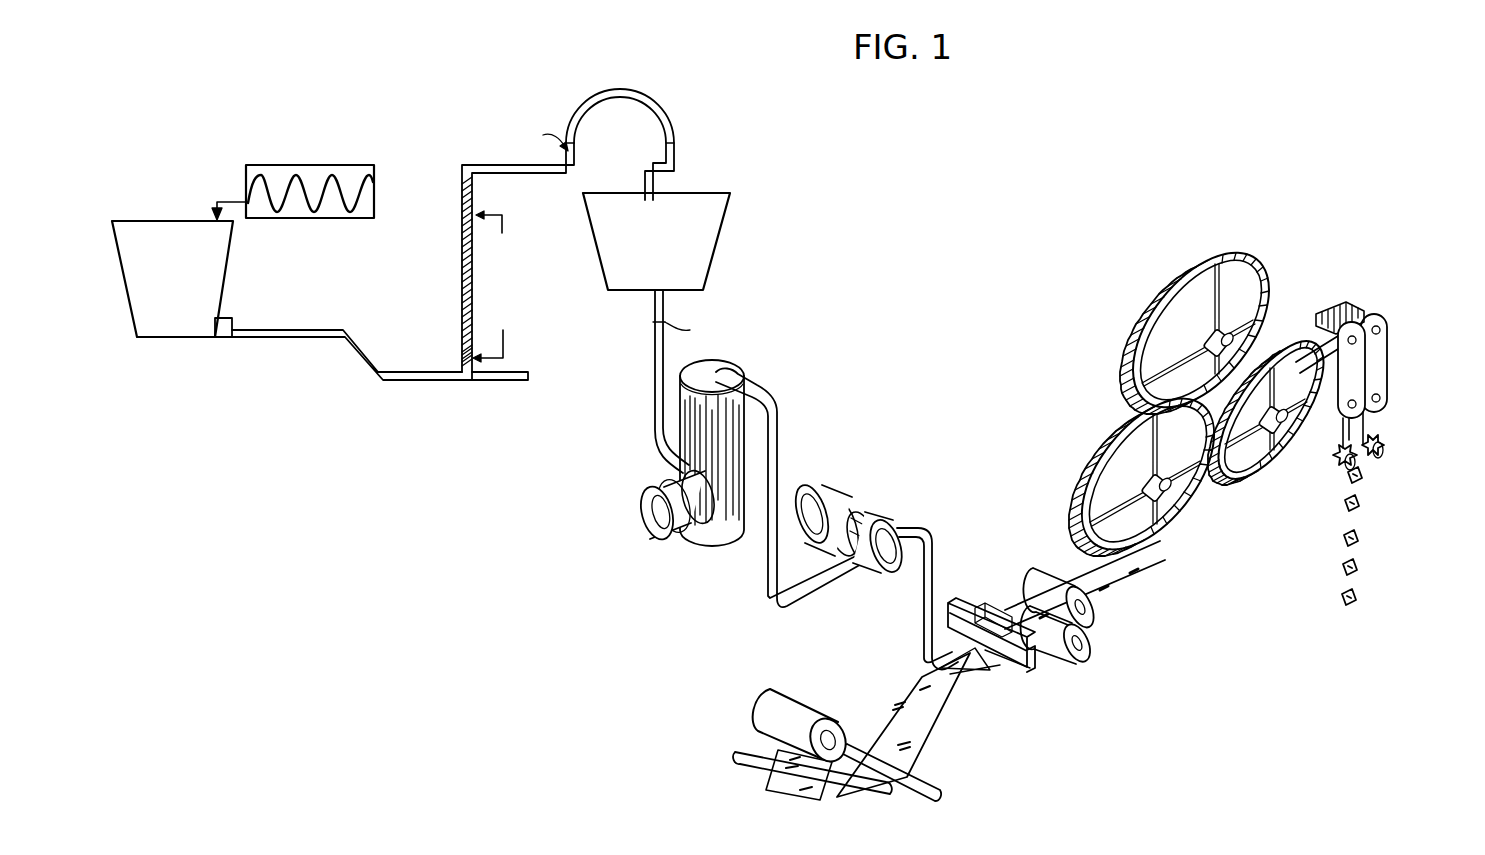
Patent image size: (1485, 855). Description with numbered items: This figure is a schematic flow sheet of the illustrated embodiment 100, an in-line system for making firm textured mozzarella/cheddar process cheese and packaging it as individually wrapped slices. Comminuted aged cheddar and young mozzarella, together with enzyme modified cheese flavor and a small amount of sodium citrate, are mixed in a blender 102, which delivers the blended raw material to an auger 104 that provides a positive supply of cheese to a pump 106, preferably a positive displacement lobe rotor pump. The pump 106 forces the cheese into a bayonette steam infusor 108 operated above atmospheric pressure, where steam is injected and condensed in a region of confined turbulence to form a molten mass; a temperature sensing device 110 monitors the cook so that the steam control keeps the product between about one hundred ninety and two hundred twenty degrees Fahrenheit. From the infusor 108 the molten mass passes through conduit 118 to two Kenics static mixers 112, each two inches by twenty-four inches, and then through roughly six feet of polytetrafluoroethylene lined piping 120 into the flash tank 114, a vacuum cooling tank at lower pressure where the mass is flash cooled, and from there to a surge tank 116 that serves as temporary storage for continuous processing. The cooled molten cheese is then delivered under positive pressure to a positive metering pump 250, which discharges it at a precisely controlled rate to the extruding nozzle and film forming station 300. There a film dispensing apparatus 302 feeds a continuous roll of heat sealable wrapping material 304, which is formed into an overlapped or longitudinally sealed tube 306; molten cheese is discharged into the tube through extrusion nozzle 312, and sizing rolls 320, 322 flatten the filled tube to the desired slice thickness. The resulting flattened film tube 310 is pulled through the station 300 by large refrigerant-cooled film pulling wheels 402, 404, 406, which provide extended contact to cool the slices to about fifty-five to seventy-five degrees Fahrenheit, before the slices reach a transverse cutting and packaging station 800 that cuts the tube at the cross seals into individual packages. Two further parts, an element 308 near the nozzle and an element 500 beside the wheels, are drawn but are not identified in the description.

The illustrated embodiment 100 is at (278, 400).
The blender 102 is at (341, 218).
The auger 104 is at (212, 288).
The pump 106 is at (232, 322).
The bayonette steam infusor 108 is at (515, 383).
The temperature sensing device 110 is at (567, 147).
The static mixers 112 is at (463, 207).
The flash tank 114 is at (636, 172).
The surge tank 116 is at (707, 443).
The conduit 118 is at (462, 358).
The piping 120 is at (641, 102).
The positive metering pump 250 is at (885, 527).
The extruding nozzle and film forming station 300 is at (1050, 680).
The film dispensing apparatus 302 is at (880, 727).
The wrapping material 304 is at (787, 702).
The tube 306 is at (987, 660).
The nozzle bar 308 is at (955, 600).
The flattened film tube 310 is at (1127, 563).
The extrusion nozzle 312 is at (924, 597).
The sizing roll 320 is at (1092, 600).
The sizing roll 322 is at (1092, 642).
The film pulling wheel 402 is at (1112, 440).
The film pulling wheel 404 is at (1248, 232).
The film pulling wheel 406 is at (1270, 478).
The cutter assembly 500 is at (1378, 351).
The transverse cutting and packaging station 800 is at (1388, 443).